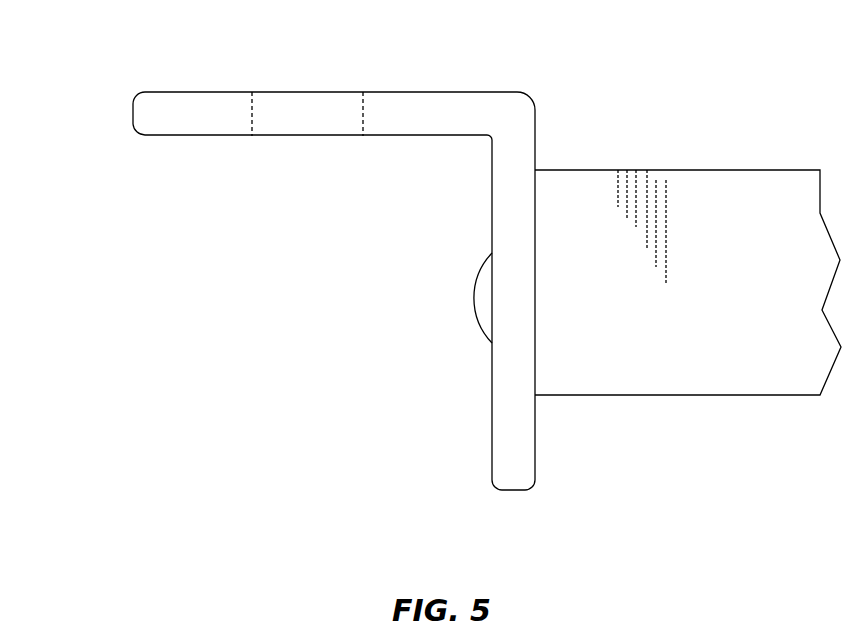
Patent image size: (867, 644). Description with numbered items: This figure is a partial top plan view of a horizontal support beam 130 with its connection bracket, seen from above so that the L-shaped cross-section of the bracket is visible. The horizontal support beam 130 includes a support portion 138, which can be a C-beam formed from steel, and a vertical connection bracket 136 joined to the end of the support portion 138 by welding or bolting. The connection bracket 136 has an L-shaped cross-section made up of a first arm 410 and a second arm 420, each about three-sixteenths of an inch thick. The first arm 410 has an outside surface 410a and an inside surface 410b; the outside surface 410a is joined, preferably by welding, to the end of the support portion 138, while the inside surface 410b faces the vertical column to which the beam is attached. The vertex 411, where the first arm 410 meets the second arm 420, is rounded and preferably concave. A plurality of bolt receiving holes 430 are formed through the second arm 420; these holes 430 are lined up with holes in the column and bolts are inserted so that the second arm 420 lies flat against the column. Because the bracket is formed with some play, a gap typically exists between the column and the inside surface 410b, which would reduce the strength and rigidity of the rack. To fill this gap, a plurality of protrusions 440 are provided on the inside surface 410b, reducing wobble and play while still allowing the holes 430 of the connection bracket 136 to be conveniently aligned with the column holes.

The horizontal support beam 130 is at (650, 78).
The vertical connection bracket 136 is at (533, 453).
The support portion 138 is at (687, 170).
The first arm 410 is at (515, 427).
The outside surface 410a is at (533, 300).
The inside surface 410b is at (490, 168).
The vertex 411 is at (487, 143).
The second arm 420 is at (132, 122).
The bolt receiving holes 430 is at (362, 117).
The protrusions 440 is at (475, 307).